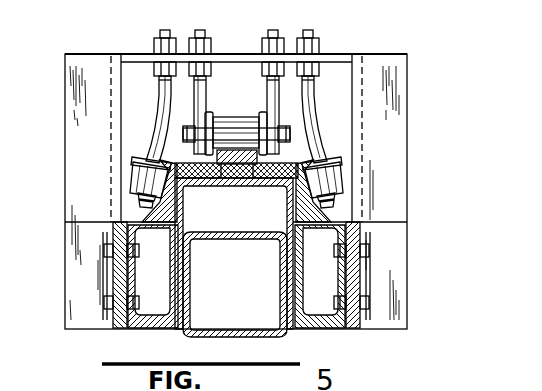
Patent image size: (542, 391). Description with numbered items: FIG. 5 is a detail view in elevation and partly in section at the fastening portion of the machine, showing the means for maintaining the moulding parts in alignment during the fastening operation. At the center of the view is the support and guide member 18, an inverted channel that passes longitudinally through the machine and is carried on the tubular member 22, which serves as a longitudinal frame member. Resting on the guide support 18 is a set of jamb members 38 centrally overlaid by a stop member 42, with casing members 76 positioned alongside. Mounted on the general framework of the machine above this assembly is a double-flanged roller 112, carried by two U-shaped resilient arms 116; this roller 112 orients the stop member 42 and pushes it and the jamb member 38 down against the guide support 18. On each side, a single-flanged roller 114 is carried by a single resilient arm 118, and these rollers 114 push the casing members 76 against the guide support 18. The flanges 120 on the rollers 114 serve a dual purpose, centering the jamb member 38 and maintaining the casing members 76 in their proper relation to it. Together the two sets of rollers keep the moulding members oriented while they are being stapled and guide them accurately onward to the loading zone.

The support and guide member 18 is at (193, 188).
The tubular member 22 is at (194, 290).
The jamb member 38 is at (173, 161).
The stop member 42 is at (233, 168).
The casing member 76 is at (144, 222).
The double-flanged roller 112 is at (212, 114).
The single-flanged roller 114 is at (133, 178).
The U-shaped resilient arm 116 is at (266, 87).
The single resilient arm 118 is at (160, 100).
The flange 120 is at (135, 159).